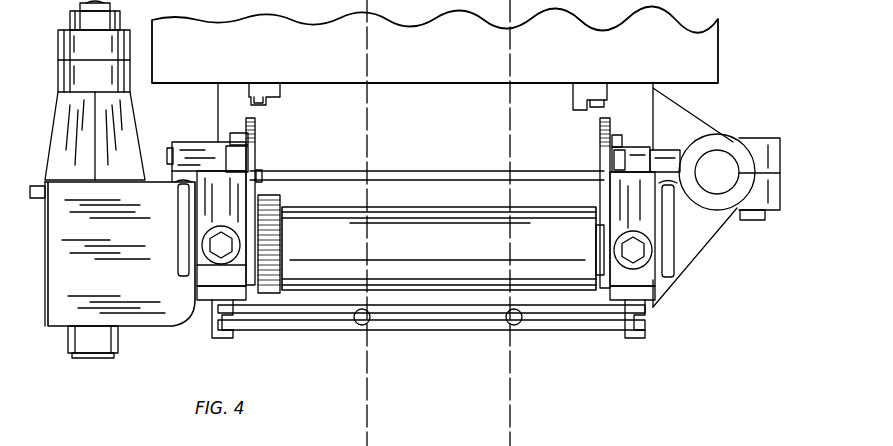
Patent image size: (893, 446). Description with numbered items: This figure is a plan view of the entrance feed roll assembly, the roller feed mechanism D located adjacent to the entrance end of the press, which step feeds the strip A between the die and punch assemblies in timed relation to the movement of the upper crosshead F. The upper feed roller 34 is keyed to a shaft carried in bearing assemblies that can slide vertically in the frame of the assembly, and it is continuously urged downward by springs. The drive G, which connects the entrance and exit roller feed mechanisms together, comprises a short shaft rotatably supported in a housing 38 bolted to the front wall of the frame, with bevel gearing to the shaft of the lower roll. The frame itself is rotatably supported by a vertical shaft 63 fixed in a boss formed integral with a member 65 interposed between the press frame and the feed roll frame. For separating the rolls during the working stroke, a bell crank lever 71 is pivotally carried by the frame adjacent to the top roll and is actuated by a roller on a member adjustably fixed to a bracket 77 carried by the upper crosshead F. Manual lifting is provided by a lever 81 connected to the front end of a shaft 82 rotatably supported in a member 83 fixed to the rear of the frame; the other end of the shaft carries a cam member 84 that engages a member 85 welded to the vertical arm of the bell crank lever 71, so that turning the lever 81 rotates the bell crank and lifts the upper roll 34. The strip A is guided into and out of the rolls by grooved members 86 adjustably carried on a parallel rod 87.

The drive G is at (66, 46).
The upper crosshead F is at (480, 68).
The roller feed mechanism D is at (688, 250).
The strip A is at (500, 401).
The upper feed roller 34 is at (450, 225).
The housing 38 is at (68, 312).
The vertical shaft 63 is at (723, 157).
The member 65 is at (216, 97).
The bell crank lever 71 is at (252, 134).
The bracket 77 is at (280, 90).
The lever 81 is at (180, 262).
The shaft 82 is at (168, 155).
The member 83 is at (209, 145).
The cam member 84 is at (240, 158).
The member 85 is at (235, 136).
The guide member 86 is at (357, 323).
The parallel rod 87 is at (590, 330).